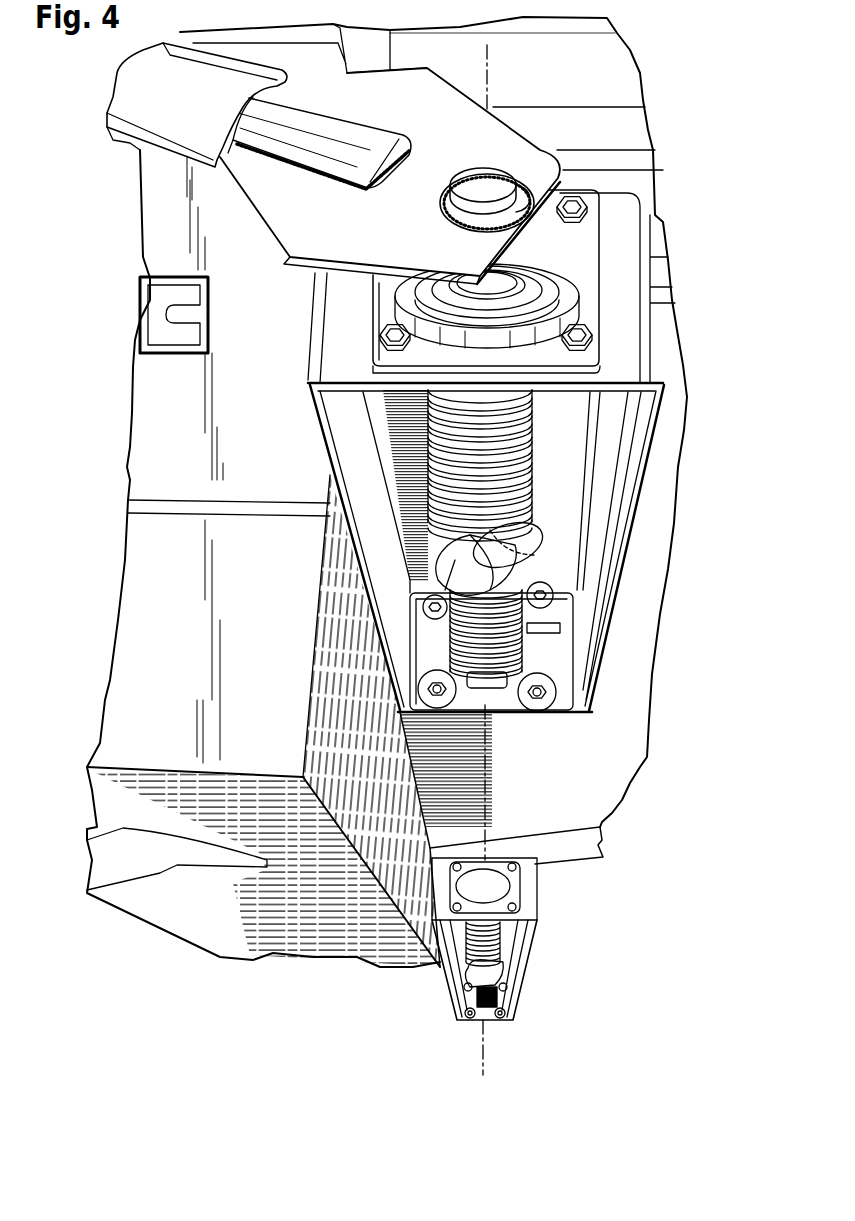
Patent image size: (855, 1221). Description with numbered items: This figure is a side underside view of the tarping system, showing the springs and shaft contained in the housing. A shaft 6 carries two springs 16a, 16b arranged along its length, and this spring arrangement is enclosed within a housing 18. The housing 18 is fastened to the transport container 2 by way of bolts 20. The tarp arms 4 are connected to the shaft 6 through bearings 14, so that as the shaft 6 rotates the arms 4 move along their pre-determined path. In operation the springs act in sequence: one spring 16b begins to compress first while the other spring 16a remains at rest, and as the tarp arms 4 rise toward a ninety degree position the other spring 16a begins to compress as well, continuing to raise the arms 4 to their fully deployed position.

The transport container 2 is at (647, 188).
The tarp arms 4 is at (173, 110).
The shaft 6 is at (498, 175).
The bearings 14 is at (555, 300).
The spring 16a is at (533, 473).
The spring 16b is at (523, 642).
The housing 18 is at (313, 420).
The bolts 20 is at (550, 698).